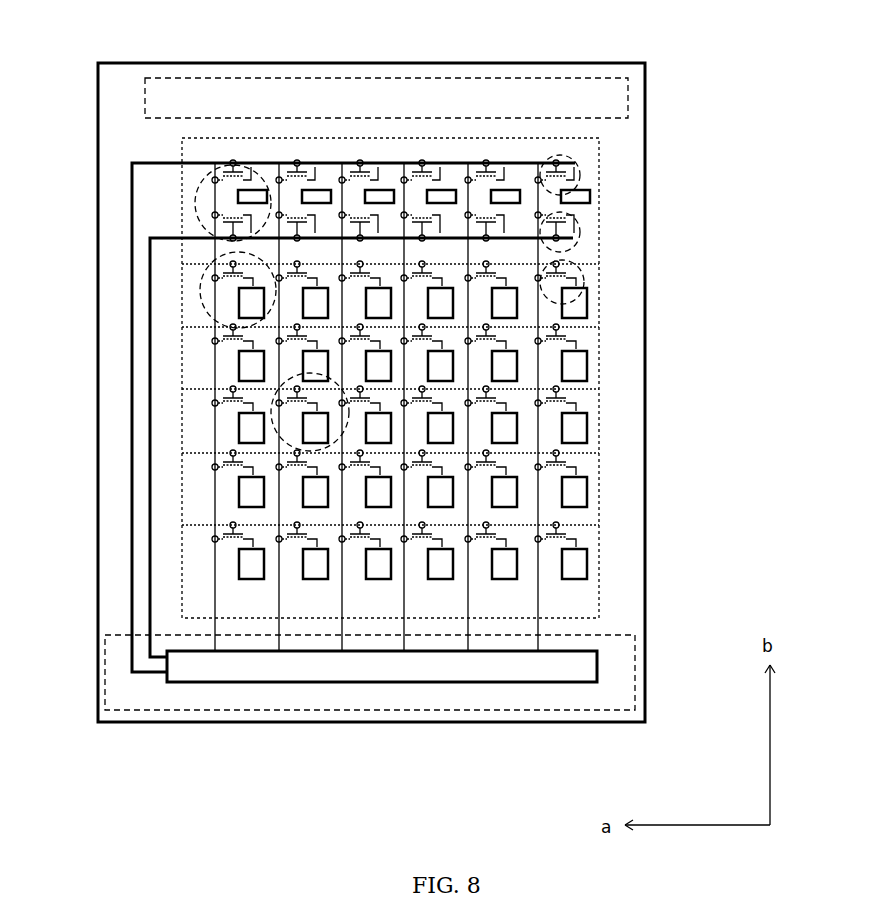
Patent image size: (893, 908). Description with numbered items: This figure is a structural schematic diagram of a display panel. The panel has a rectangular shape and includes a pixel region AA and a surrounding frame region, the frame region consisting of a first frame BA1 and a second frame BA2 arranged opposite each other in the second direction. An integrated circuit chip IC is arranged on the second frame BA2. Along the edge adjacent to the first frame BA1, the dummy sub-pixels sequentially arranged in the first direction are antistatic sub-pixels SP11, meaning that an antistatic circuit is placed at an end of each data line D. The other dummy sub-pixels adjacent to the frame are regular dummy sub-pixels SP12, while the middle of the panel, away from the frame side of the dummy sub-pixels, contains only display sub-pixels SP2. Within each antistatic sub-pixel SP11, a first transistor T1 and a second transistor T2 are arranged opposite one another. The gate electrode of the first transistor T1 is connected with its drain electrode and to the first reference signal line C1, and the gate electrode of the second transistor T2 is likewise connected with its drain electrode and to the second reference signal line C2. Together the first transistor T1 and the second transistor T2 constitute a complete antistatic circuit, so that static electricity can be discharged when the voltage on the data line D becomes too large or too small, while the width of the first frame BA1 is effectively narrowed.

The pixel region AA is at (342, 147).
The first frame BA1 is at (618, 115).
The second frame BA2 is at (622, 655).
The first reference signal line C1 is at (150, 162).
The second reference signal line C2 is at (150, 238).
The antistatic sub-pixel SP11 is at (253, 167).
The regular dummy sub-pixel SP12 is at (215, 278).
The display sub-pixel SP2 is at (262, 392).
The first transistor T1 is at (580, 165).
The second transistor T2 is at (582, 222).
The data line D is at (469, 638).
The integrated circuit chip IC is at (382, 666).